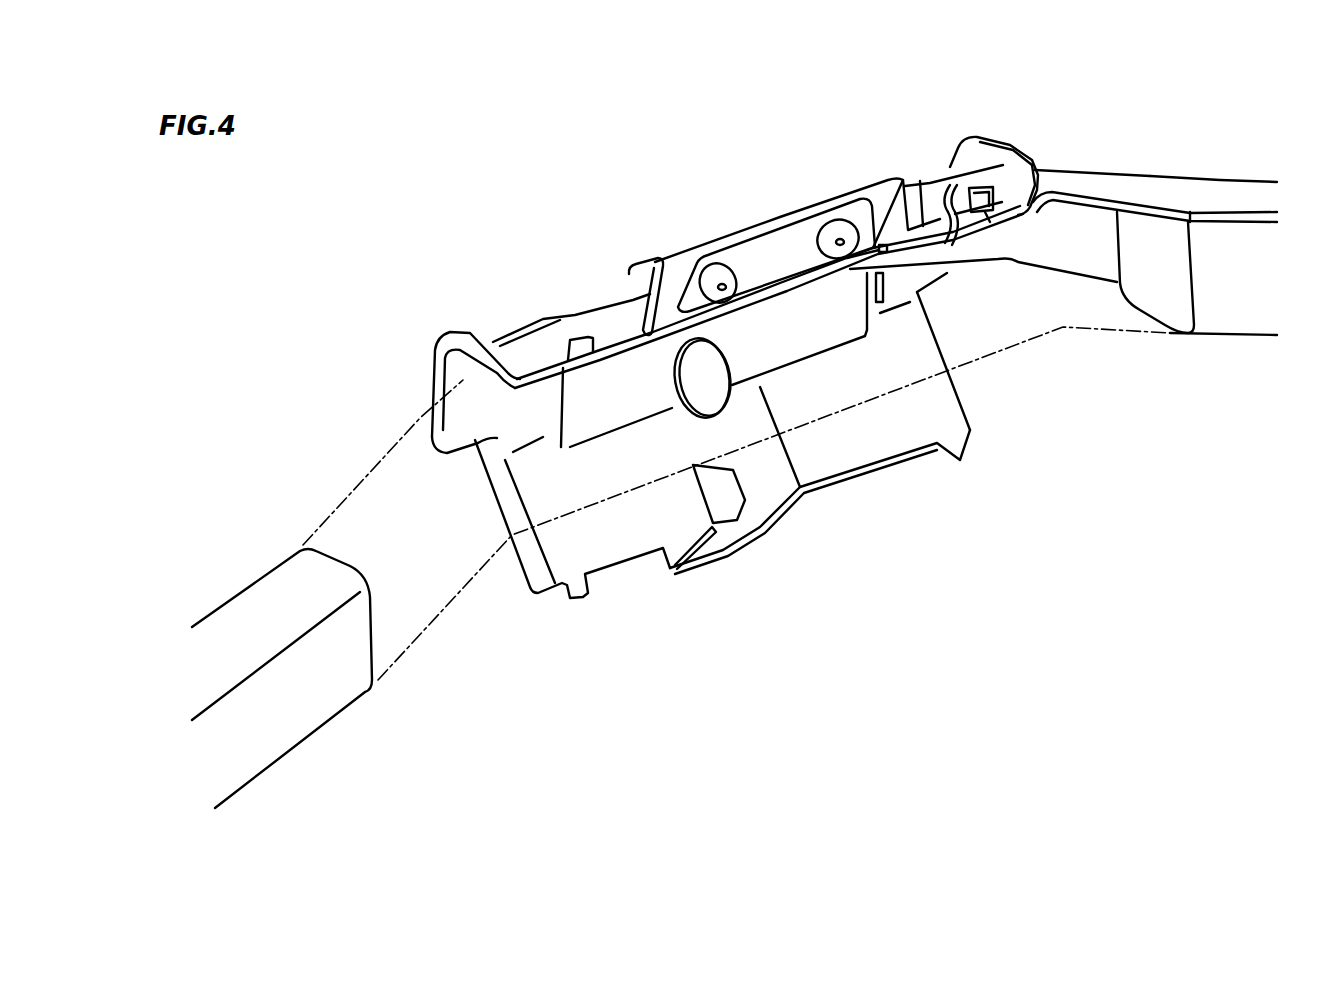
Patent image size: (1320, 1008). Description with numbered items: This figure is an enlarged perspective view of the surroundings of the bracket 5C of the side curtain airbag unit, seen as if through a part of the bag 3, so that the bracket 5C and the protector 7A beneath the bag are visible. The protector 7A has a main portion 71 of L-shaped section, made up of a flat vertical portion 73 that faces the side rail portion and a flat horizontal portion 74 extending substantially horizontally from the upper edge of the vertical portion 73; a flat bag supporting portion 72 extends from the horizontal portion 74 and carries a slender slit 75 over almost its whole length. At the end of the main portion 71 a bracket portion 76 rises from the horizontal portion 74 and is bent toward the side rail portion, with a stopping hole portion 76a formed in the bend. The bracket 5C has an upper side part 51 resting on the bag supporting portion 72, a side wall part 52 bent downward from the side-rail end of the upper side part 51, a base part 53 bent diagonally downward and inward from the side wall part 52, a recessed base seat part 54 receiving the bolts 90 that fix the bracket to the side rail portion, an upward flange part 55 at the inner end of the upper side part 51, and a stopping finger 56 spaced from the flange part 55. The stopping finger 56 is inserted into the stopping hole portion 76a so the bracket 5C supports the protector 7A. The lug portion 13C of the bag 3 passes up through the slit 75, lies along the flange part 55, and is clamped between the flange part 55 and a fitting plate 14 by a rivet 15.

The bag 3 is at (1245, 317).
The bracket 5C is at (990, 142).
The protector 7A is at (1104, 185).
The lug portion 13C is at (766, 222).
The fitting plate 14 is at (808, 228).
The rivet 15 is at (722, 273).
The upper side part 51 is at (538, 332).
The side wall part 52 is at (458, 364).
The base part 53 is at (627, 550).
The base seat part 54 is at (727, 540).
The flange part 55 is at (635, 325).
The stopping finger 56 is at (990, 190).
The main portion 71 is at (1233, 177).
The bag supporting portion 72 is at (893, 247).
The vertical portion 73 is at (1082, 257).
The horizontal portion 74 is at (1157, 190).
The slit 75 is at (880, 247).
The bracket portion 76 is at (947, 182).
The stopping hole portion 76a is at (990, 210).
The bolts 90 is at (732, 505).